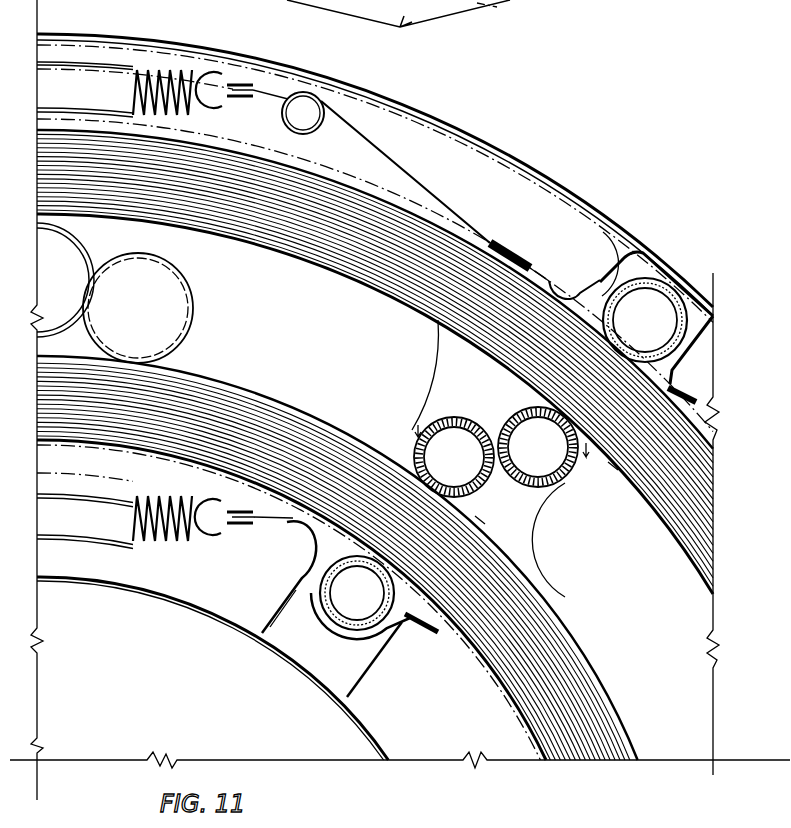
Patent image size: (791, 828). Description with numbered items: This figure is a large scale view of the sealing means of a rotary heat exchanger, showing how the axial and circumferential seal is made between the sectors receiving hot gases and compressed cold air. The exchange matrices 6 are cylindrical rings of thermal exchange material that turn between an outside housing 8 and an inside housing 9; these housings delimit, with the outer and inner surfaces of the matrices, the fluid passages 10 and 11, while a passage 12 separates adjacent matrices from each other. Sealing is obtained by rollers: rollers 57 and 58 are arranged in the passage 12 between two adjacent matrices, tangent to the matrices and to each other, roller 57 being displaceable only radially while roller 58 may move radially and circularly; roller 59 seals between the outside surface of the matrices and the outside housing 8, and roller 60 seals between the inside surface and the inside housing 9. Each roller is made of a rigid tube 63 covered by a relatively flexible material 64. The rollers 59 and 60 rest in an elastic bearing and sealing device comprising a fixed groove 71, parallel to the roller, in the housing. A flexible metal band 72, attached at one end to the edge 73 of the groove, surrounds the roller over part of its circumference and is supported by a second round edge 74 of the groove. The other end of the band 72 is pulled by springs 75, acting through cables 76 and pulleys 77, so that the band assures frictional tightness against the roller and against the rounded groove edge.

The exchange matrices 6 is at (703, 518).
The outside housing 8 is at (491, 138).
The inside housing 9 is at (105, 590).
The fluid passage 10 is at (511, 193).
The fluid passage 11 is at (216, 590).
The passage 12 is at (276, 331).
The roller 57 is at (531, 437).
The roller 58 is at (446, 446).
The roller 59 is at (660, 302).
The roller 60 is at (362, 602).
The rigid tube 63 is at (568, 482).
The flexible material 64 is at (536, 497).
The fixed groove 71 is at (694, 350).
The flexible metal band 72 is at (642, 276).
The edge 73 is at (700, 400).
The round edge 74 is at (565, 293).
The springs 75 is at (143, 68).
The cables 76 is at (402, 170).
The pulleys 77 is at (297, 118).